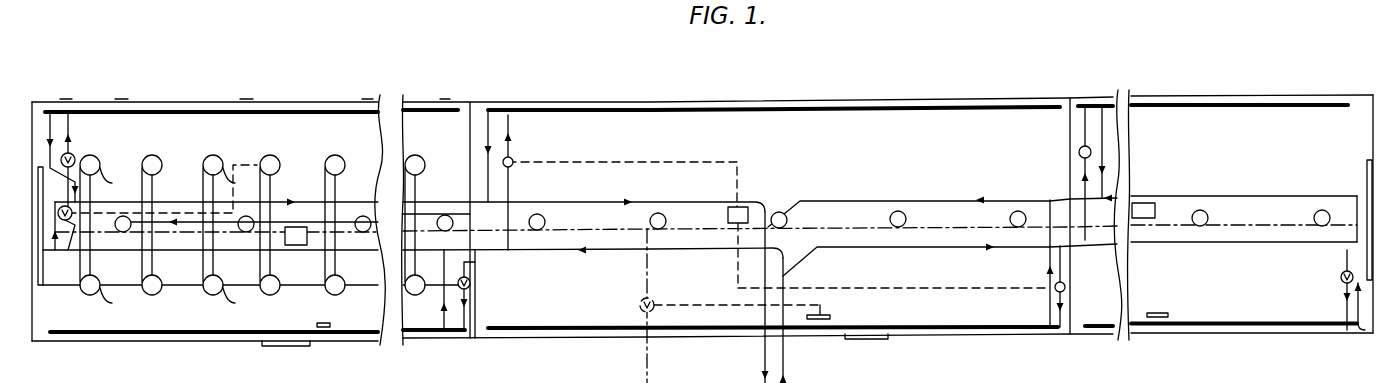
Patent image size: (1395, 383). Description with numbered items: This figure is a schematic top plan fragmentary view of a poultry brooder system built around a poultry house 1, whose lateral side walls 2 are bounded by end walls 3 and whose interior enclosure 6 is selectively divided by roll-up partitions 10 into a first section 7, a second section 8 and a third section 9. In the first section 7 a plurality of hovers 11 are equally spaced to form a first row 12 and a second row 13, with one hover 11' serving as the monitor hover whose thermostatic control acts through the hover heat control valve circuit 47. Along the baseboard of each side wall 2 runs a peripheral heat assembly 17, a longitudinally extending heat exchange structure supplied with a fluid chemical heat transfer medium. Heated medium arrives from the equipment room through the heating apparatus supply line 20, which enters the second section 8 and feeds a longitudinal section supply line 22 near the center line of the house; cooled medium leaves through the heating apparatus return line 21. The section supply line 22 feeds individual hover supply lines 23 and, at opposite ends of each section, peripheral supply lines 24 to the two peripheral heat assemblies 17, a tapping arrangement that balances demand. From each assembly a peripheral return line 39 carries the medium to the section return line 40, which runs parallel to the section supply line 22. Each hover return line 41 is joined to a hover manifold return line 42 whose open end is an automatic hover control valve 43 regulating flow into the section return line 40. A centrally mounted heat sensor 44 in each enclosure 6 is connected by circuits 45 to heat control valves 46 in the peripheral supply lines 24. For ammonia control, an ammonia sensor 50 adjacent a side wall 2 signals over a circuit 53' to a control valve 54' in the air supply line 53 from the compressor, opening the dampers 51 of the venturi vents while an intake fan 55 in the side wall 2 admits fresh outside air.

The poultry house 1 is at (598, 93).
The lateral side wall 2 is at (937, 98).
The end wall 3 is at (32, 318).
The enclosure 6 is at (210, 140).
The first section 7 is at (282, 98).
The second section 8 is at (788, 96).
The third section 9 is at (1204, 93).
The roll-up partition 10 is at (477, 316).
The hover 11 is at (226, 247).
The monitor hover 11' is at (286, 206).
The first row 12 is at (82, 305).
The second row 13 is at (427, 152).
The peripheral heat assembly 17 is at (172, 117).
The heating apparatus supply line 20 is at (785, 350).
The heating apparatus return line 21 is at (763, 350).
The section supply line 22 is at (175, 252).
The hover supply line 23 is at (132, 172).
The peripheral supply line 24 is at (71, 130).
The peripheral return line 39 is at (50, 125).
The section return line 40 is at (168, 202).
The hover return line 41 is at (146, 194).
The hover manifold return line 42 is at (103, 226).
The automatic hover control valve 43 is at (66, 248).
The heat sensor 44 is at (293, 246).
The circuit 45 is at (682, 162).
The heat control valve 46 is at (72, 154).
The hover heat control valve circuit 47 is at (190, 212).
The ammonia sensor 50 is at (328, 330).
The damper 51 is at (450, 215).
The air supply line 53 is at (706, 197).
The circuit 53' is at (737, 287).
The control valve 54' is at (622, 306).
The intake fan 55 is at (292, 347).